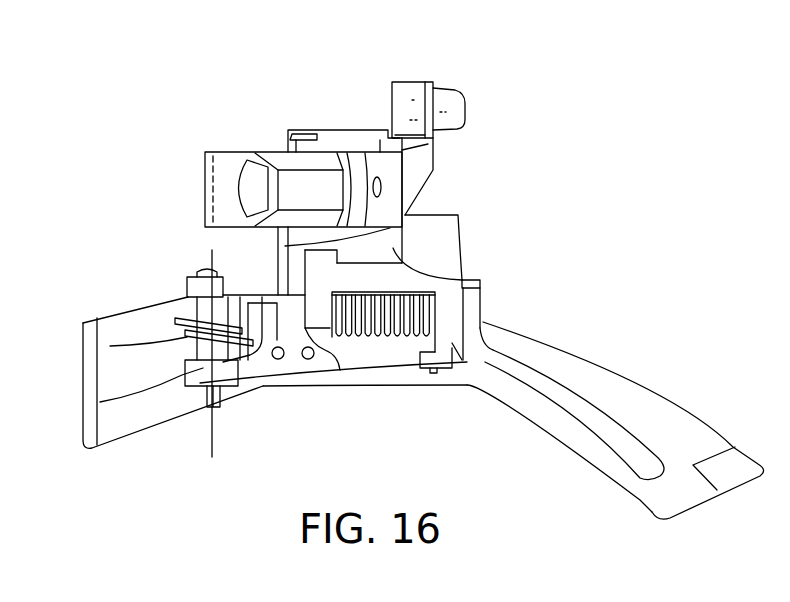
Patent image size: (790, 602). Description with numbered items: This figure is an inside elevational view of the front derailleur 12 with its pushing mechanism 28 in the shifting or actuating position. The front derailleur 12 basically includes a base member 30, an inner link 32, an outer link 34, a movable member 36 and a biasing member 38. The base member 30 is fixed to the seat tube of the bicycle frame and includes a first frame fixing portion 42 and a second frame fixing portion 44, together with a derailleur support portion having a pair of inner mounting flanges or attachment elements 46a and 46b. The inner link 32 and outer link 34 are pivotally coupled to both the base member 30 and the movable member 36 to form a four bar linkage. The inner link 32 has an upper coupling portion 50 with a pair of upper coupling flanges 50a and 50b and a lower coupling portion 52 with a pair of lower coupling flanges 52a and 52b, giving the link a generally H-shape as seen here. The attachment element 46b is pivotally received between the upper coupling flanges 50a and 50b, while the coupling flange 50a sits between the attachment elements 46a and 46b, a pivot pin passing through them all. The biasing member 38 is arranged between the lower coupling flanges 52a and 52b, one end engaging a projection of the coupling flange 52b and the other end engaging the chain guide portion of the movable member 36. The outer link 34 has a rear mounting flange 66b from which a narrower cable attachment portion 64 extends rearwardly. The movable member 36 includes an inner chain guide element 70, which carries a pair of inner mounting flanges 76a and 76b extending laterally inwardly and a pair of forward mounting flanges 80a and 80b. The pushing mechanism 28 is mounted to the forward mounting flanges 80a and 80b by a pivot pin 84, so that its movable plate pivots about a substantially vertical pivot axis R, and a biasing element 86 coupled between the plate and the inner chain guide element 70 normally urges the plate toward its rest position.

The front derailleur 12 is at (480, 60).
The pushing mechanism 28 is at (161, 281).
The base member 30 is at (207, 171).
The inner link 32 is at (464, 236).
The outer link 34 is at (436, 155).
The movable member 36 is at (470, 266).
The biasing member 38 is at (397, 326).
The first frame fixing portion 42 is at (392, 190).
The second frame fixing portion 44 is at (216, 205).
The inner mounting flange 46a is at (296, 255).
The inner mounting flange 46b is at (466, 281).
The upper coupling portion 50 is at (378, 78).
The upper coupling flange 50a is at (319, 228).
The upper coupling flange 50b is at (361, 226).
The lower coupling portion 52 is at (458, 318).
The lower coupling flange 52a is at (321, 345).
The lower coupling flange 52b is at (447, 344).
The cable attachment portion 64 is at (409, 95).
The rear mounting flange 66b is at (417, 150).
The inner chain guide element 70 is at (675, 490).
The inner mounting flange 76a is at (293, 340).
The inner mounting flange 76b is at (472, 343).
The forward mounting flange 80a is at (190, 287).
The forward mounting flange 80b is at (103, 402).
The pivot pin 84 is at (207, 272).
The biasing element 86 is at (110, 346).
The pivot axis R is at (207, 437).